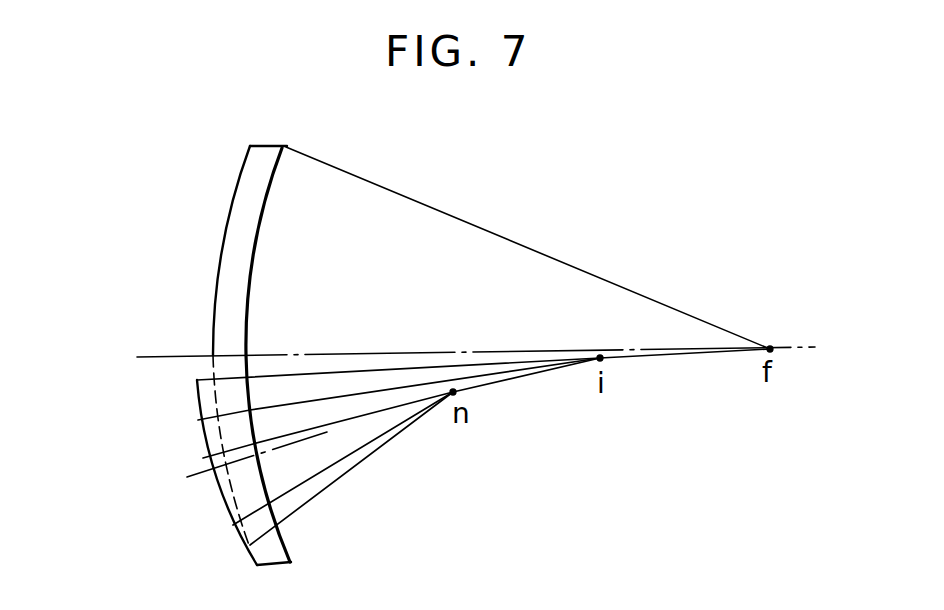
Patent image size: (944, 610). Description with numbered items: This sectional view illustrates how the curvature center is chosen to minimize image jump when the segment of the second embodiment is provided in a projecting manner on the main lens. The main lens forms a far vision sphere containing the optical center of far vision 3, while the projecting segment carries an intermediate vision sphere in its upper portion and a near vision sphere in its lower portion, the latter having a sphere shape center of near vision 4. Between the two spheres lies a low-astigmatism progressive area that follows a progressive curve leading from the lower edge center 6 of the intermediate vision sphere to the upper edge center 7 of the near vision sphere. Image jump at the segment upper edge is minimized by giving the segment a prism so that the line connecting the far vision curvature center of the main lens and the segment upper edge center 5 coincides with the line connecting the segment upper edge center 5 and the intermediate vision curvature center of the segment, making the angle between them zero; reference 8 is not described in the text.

The optical center of far vision 3 is at (214, 355).
The sphere shape center of near vision 4 is at (206, 474).
The segment upper edge center 5 is at (197, 380).
The lower edge center of the intermediate vision sphere 6 is at (198, 420).
The upper edge center of the near vision sphere 7 is at (203, 458).
The lower light rays through point n 8 is at (233, 525).